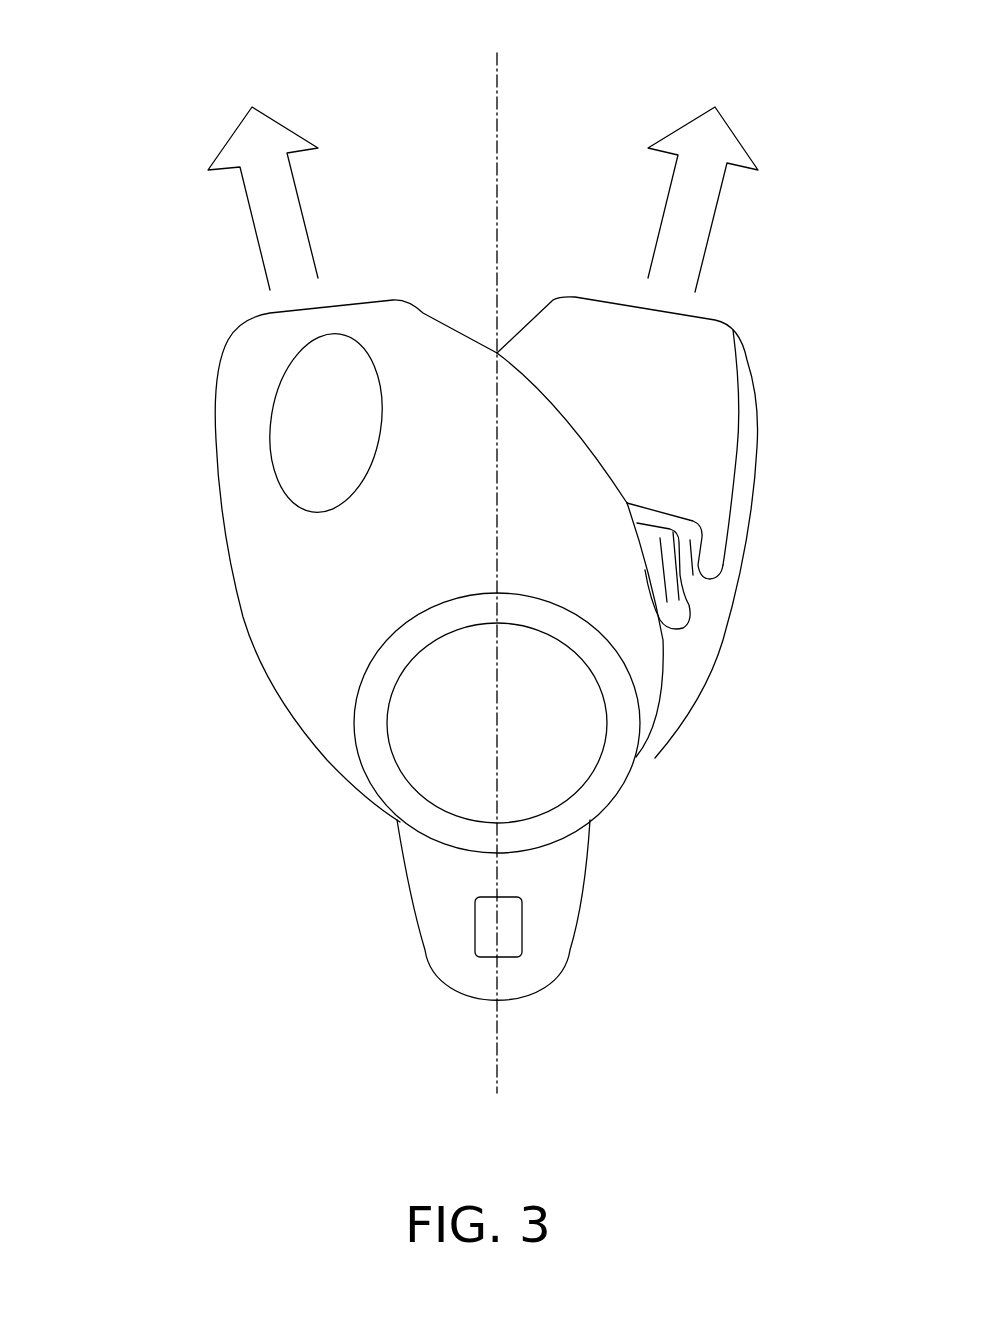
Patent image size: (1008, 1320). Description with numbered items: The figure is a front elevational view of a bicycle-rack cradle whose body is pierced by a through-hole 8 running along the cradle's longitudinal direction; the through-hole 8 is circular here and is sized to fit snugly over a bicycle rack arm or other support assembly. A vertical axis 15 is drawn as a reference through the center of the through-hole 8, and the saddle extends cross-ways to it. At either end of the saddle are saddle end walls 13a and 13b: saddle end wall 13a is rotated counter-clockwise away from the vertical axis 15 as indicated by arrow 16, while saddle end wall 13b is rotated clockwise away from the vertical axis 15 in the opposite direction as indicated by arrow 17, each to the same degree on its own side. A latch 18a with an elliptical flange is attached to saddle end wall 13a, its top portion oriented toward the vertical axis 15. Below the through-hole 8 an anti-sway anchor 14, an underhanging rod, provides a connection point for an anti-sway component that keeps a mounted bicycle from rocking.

The through-hole 8 is at (563, 762).
The saddle end wall 13a is at (235, 375).
The saddle end wall 13b is at (693, 353).
The anti-sway anchor 14 is at (540, 948).
The vertical axis 15 is at (497, 66).
The arrow 16 is at (283, 215).
The arrow 17 is at (687, 203).
The latch 18a is at (298, 450).